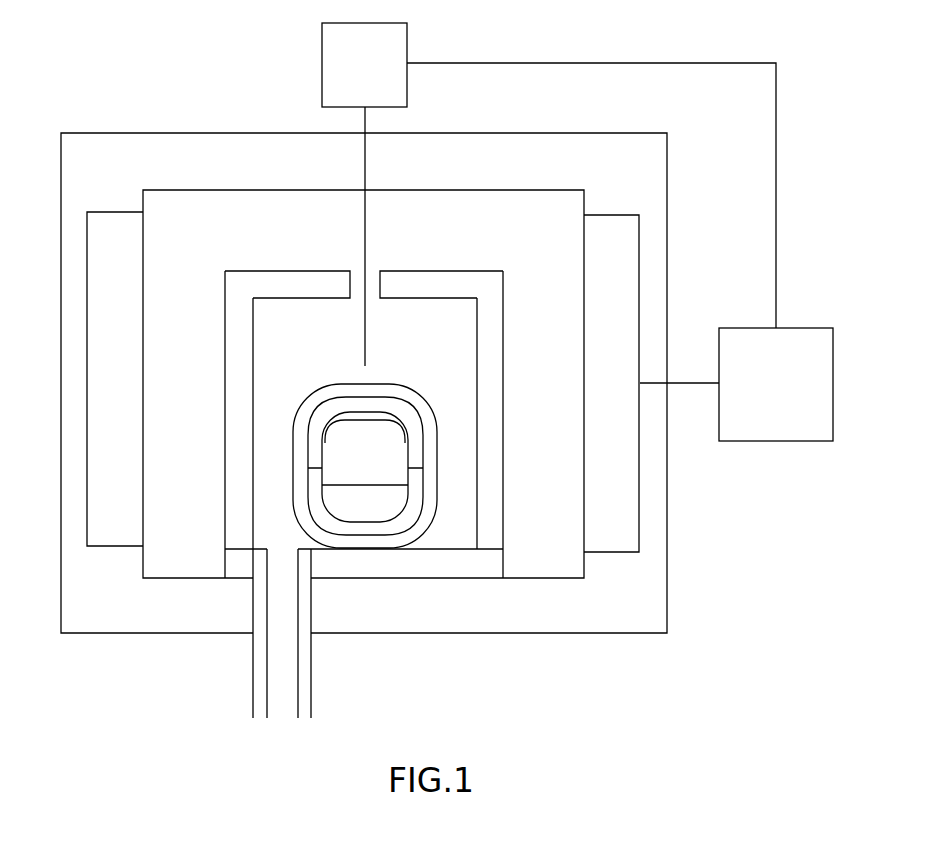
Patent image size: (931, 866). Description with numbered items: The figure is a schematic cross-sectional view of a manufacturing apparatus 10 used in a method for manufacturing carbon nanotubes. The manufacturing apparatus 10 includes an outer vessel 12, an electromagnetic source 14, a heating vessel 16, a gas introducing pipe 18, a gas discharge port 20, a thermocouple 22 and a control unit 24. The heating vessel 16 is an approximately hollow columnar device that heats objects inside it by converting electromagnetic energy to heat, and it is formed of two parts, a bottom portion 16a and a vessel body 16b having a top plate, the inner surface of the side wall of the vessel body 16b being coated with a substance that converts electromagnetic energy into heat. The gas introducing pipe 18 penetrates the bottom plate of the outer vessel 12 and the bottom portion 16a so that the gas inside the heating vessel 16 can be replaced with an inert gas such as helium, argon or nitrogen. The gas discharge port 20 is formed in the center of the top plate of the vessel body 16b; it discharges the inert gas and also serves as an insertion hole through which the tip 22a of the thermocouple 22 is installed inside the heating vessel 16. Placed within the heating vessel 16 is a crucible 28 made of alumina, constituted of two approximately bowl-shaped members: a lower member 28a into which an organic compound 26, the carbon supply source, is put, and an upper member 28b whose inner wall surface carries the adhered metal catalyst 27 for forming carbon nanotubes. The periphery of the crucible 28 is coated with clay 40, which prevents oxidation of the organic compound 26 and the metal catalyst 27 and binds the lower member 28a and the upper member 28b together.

The manufacturing apparatus 10 is at (104, 116).
The outer vessel 12 is at (79, 558).
The electromagnetic source 14 is at (113, 230).
The heating vessel 16 is at (413, 482).
The bottom portion 16a is at (468, 572).
The vessel body 16b is at (490, 534).
The gas introducing pipe 18 is at (258, 672).
The gas discharge port 20 is at (373, 281).
The thermocouple 22 is at (515, 194).
The tip 22a is at (363, 358).
The control unit 24 is at (782, 427).
The organic compound 26 is at (365, 512).
The metal catalyst 27 is at (328, 418).
The crucible 28 is at (368, 517).
The lower member 28a is at (413, 492).
The upper member 28b is at (415, 458).
The clay 40 is at (302, 461).